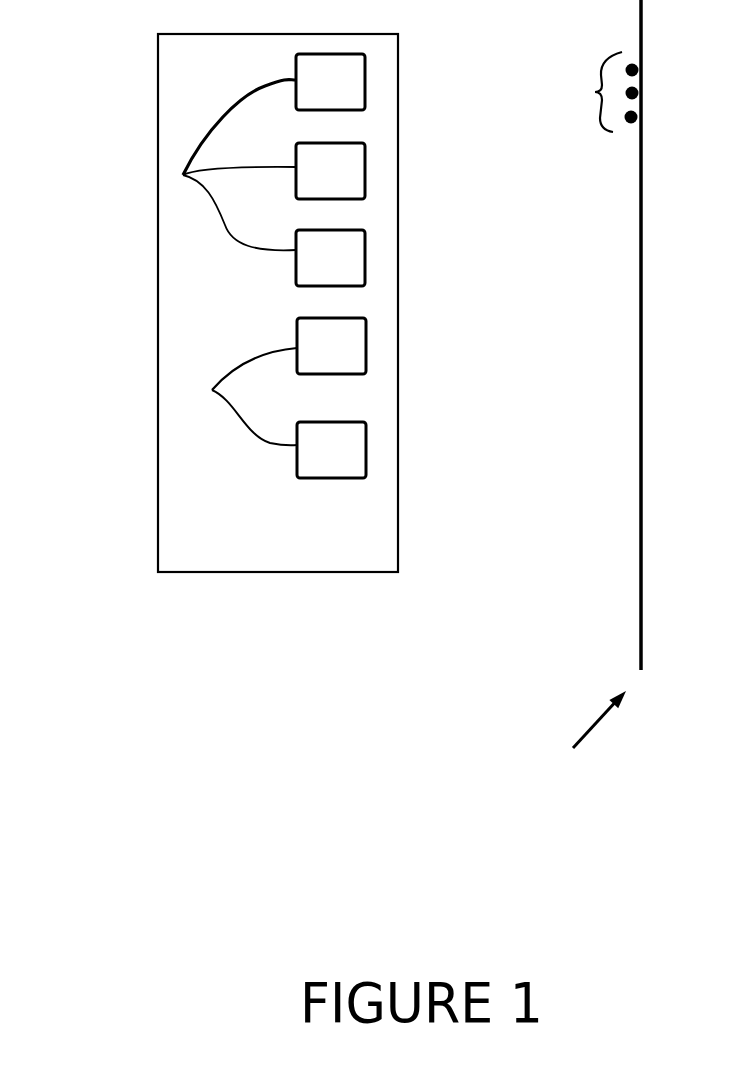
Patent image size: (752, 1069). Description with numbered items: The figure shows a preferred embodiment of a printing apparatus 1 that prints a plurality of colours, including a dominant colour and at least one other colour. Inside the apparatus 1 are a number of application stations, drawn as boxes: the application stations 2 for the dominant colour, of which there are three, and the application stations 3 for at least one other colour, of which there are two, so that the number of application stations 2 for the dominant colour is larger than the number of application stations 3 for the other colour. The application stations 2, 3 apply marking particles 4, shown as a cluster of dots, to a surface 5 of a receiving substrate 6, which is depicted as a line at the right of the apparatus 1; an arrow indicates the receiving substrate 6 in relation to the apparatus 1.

The apparatus 1 is at (158, 90).
The application stations for the dominant colour 2 is at (183, 175).
The application stations for at least one other colour 3 is at (212, 390).
The marking particles 4 is at (595, 92).
The surface 5 is at (637, 622).
The receiving substrate 6 is at (579, 747).